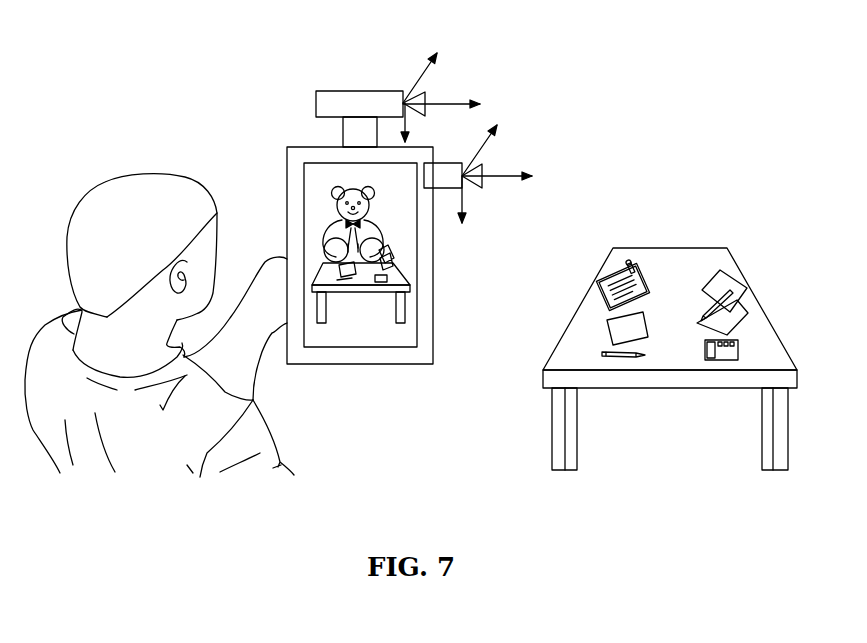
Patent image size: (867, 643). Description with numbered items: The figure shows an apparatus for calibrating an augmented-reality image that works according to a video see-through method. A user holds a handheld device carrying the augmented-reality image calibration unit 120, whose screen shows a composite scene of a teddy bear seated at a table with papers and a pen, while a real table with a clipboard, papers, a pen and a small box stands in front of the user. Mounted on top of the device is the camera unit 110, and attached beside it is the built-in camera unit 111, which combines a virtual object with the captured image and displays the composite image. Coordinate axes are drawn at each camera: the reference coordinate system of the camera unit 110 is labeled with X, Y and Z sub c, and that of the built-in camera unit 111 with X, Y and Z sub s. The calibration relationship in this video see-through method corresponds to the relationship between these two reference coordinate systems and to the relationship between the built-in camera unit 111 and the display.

The camera unit 110 is at (360, 91).
The built-in camera unit 111 is at (450, 190).
The augmented-reality image calibration unit 120 is at (343, 129).